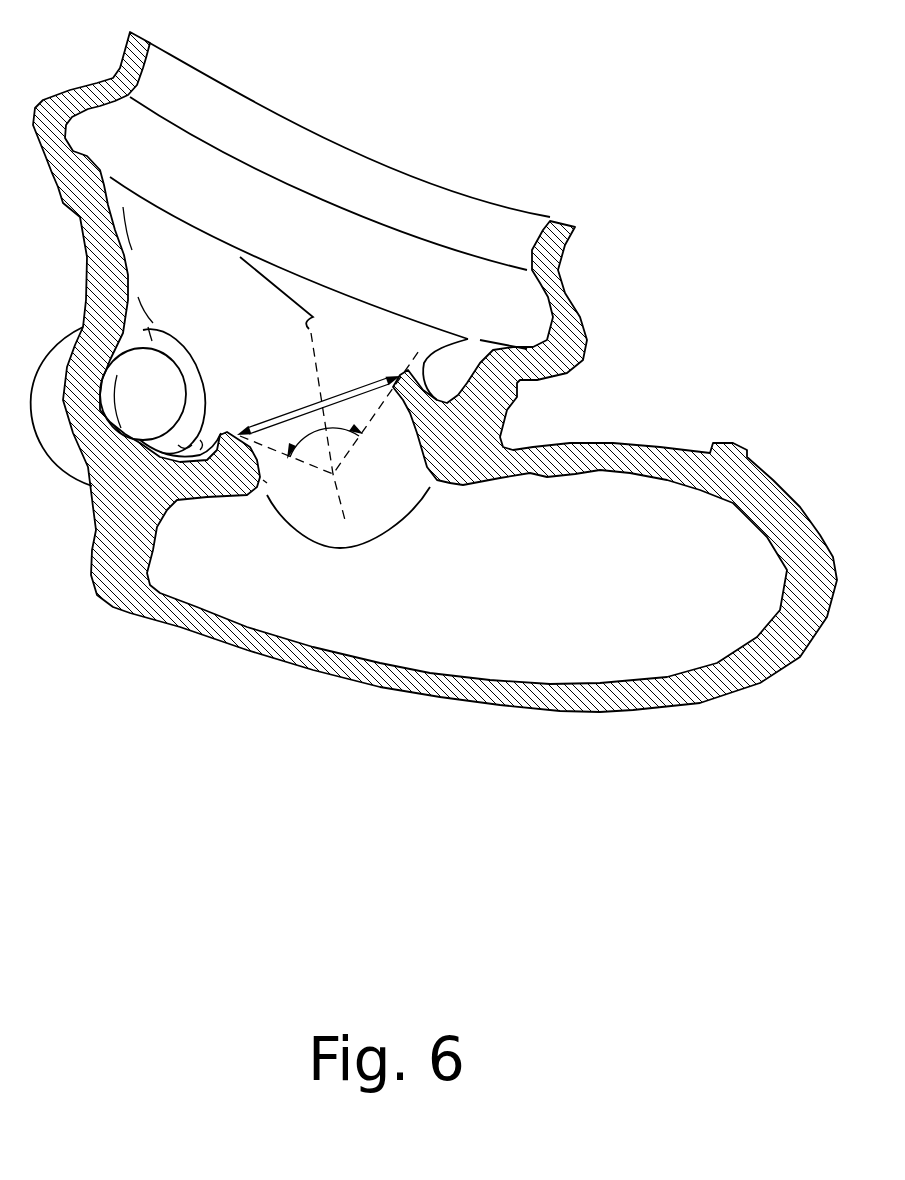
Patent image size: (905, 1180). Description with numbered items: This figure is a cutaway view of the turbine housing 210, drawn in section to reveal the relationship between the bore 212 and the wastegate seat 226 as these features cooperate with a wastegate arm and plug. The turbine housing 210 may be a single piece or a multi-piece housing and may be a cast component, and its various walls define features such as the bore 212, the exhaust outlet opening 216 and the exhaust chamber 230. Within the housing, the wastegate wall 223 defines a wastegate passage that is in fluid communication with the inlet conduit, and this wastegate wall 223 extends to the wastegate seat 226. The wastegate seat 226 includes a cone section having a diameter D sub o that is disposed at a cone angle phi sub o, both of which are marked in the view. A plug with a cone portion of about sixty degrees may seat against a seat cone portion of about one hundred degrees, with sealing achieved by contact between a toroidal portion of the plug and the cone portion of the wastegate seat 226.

The turbine housing 210 is at (598, 132).
The bore 212 is at (177, 404).
The exhaust outlet opening 216 is at (352, 151).
The wastegate wall 223 is at (318, 502).
The wastegate seat 226 is at (276, 417).
The exhaust chamber 230 is at (335, 262).